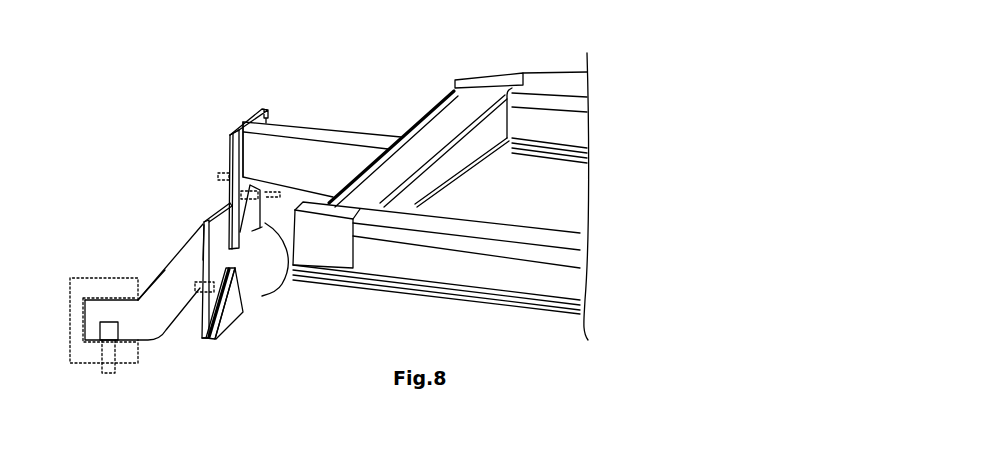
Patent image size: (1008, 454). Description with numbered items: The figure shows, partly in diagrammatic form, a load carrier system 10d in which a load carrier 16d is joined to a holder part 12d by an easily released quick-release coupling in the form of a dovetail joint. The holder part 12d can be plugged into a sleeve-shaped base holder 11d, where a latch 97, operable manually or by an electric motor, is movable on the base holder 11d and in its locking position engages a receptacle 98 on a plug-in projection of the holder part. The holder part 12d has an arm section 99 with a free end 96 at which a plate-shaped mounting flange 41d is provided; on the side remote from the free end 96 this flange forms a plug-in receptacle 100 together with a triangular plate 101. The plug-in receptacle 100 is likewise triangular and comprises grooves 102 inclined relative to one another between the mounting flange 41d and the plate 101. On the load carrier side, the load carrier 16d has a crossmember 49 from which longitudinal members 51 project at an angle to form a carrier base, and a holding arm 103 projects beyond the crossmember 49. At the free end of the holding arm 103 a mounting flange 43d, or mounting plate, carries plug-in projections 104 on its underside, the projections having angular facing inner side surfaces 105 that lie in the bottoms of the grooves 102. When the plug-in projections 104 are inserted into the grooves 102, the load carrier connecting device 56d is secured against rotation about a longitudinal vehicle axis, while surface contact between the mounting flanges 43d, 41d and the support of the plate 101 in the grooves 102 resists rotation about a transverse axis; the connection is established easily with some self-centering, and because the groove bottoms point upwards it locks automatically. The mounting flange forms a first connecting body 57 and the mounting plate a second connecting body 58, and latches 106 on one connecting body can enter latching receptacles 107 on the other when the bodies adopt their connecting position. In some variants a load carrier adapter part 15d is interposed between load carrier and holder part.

The load carrier system 10d is at (140, 124).
The base holder 11d is at (98, 284).
The holder part 12d is at (175, 273).
The load carrier adapter part 15d is at (263, 108).
The load carrier 16d is at (459, 78).
The mounting flange 41d is at (203, 220).
The mounting flange 43d is at (228, 152).
The crossmember 49 is at (410, 130).
The longitudinal members 51 is at (512, 80).
The load carrier connecting device 56d is at (233, 338).
The first connecting body 57 is at (219, 340).
The second connecting body 58 is at (235, 132).
The free end 96 is at (200, 238).
The latch 97 is at (113, 375).
The receptacle 98 is at (100, 333).
The arm section 99 is at (163, 289).
The plug-in receptacle 100 is at (212, 340).
The plate 101 is at (243, 313).
The grooves 102 is at (201, 341).
The holding arm 103 is at (310, 127).
The plug-in projections 104 is at (276, 269).
The inner side surfaces 105 is at (256, 228).
The latches 106 is at (233, 183).
The latching receptacles 107 is at (195, 292).